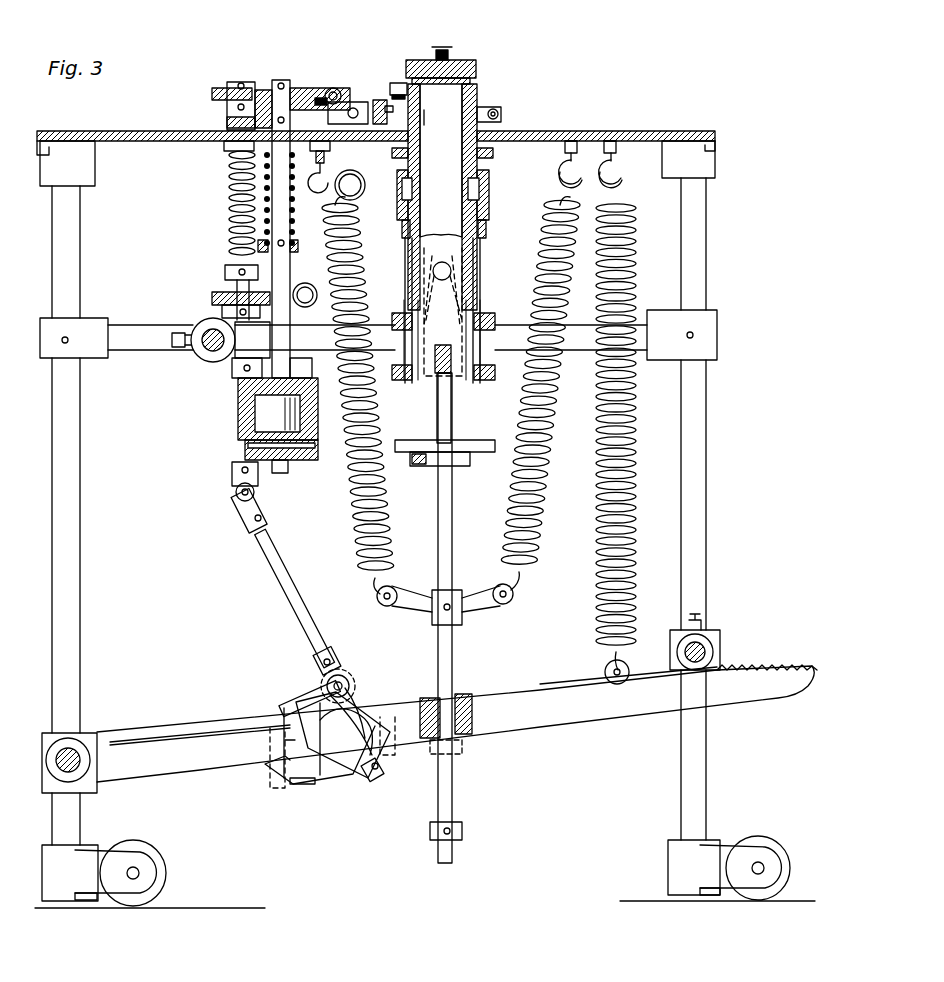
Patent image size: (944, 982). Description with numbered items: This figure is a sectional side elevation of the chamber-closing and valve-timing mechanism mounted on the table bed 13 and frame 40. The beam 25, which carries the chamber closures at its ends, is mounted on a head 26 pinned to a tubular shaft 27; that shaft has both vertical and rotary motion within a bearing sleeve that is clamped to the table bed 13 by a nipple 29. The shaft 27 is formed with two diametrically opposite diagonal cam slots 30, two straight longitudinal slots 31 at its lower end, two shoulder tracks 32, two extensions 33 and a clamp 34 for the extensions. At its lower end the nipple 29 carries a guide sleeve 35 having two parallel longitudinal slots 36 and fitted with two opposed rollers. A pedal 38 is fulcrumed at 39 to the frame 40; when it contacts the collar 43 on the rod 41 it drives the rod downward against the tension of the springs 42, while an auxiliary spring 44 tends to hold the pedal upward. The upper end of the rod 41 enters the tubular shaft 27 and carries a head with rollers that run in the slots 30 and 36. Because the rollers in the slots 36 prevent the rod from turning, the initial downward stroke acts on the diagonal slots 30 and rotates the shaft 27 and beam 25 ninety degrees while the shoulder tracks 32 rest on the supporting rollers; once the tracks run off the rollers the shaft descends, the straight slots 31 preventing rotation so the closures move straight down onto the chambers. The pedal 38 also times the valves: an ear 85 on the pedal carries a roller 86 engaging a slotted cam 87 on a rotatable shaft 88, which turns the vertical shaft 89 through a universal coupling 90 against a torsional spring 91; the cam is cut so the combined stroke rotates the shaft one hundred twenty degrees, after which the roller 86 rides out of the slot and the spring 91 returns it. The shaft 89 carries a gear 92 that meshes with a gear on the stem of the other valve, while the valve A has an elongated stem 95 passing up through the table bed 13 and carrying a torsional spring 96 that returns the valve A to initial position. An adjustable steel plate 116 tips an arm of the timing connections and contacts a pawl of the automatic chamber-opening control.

The table bed 13 is at (152, 128).
The beam 25 is at (443, 48).
The head 26 is at (470, 68).
The tubular shaft 27 is at (462, 162).
The nipple 29 is at (485, 180).
The diagonal cam slots 30 is at (430, 278).
The straight longitudinal slots 31 is at (455, 382).
The shoulder tracks 32 is at (457, 382).
The extensions 33 is at (466, 434).
The clamp 34 is at (456, 466).
The guide sleeve 35 is at (478, 231).
The longitudinal parallel slots 36 is at (404, 248).
The pedal 38 is at (520, 720).
The fulcrum 39 is at (75, 752).
The frame 40 is at (80, 606).
The rod 41 is at (453, 658).
The springs 42 is at (358, 545).
The collar 43 is at (466, 833).
The auxiliary spring 44 is at (596, 612).
The ear 85 is at (337, 658).
The roller 86 is at (350, 670).
The slotted cam 87 is at (360, 755).
The rotatable shaft 88 is at (294, 614).
The vertical shaft 89 is at (240, 86).
The universal coupling 90 is at (230, 502).
The torsional spring 91 is at (228, 200).
The gear 92 is at (212, 299).
The elongated stem 95 is at (282, 80).
The torsional spring 96 is at (320, 165).
The adjustable steel plate 116 is at (370, 90).
The valve A is at (238, 413).